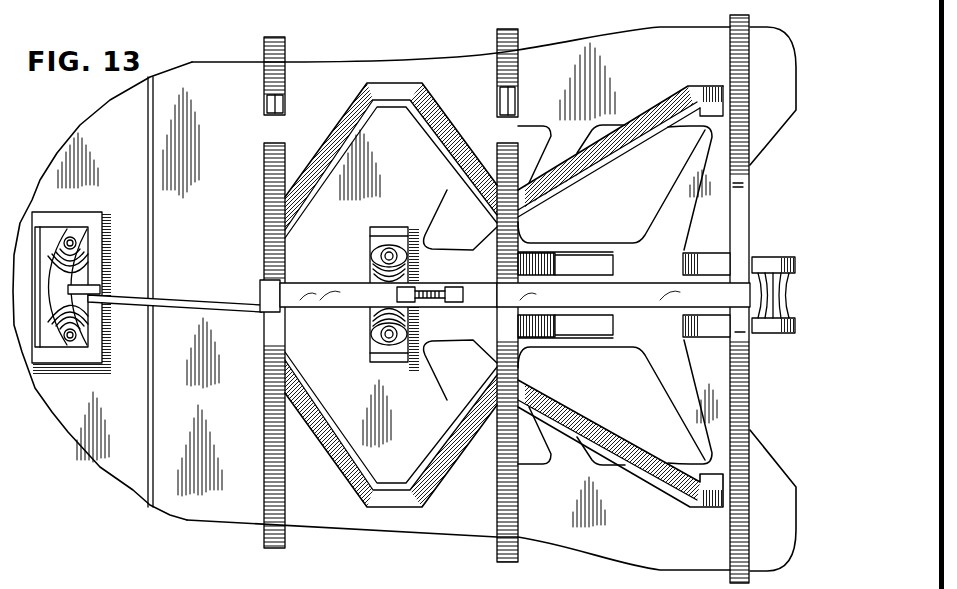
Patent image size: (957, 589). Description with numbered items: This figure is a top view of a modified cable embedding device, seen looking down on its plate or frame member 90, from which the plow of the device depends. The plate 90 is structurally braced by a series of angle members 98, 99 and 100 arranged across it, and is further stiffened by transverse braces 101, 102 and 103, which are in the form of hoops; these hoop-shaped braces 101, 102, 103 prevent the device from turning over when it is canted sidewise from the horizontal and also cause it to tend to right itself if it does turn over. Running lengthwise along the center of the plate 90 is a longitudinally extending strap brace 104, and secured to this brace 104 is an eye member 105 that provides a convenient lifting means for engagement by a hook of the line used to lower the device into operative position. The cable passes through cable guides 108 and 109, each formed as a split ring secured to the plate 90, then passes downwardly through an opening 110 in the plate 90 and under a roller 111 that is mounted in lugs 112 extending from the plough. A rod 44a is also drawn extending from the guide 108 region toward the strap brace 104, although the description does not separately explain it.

The plate or frame member 90 is at (250, 508).
The angle member 98 is at (326, 180).
The angle member 99 is at (600, 173).
The angle member 100 is at (593, 270).
The hoop brace 101 is at (264, 47).
The hoop brace 102 is at (497, 44).
The hoop brace 103 is at (730, 17).
The strap brace 104 is at (345, 299).
The eye member 105 is at (433, 290).
The cable guide 108 is at (86, 279).
The cable guide 109 is at (370, 268).
The opening 110 is at (598, 304).
The roller 111 is at (771, 277).
The lug 112 is at (704, 268).
The connecting rod 44a is at (212, 289).